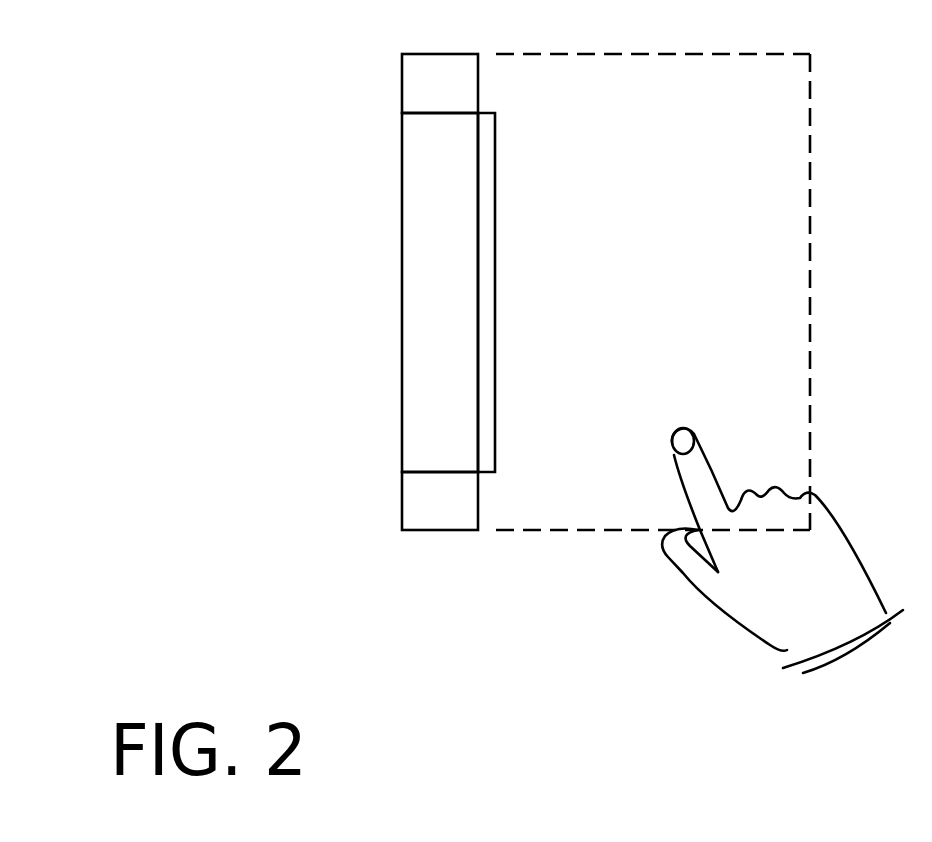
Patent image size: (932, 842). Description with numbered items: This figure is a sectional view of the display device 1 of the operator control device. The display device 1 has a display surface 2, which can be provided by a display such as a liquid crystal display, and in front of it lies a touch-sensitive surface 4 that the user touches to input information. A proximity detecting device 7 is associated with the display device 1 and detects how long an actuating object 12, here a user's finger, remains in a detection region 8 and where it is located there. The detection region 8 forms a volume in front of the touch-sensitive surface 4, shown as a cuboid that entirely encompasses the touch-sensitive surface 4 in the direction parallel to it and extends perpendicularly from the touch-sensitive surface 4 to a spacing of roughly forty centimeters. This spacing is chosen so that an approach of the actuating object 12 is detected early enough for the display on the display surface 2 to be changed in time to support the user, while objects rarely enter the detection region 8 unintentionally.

The display device 1 is at (430, 276).
The display surface 2 is at (478, 413).
The touch-sensitive surface 4 is at (495, 170).
The proximity detecting device 7 is at (430, 88).
The detection region 8 is at (653, 292).
The actuating object 12 is at (687, 457).